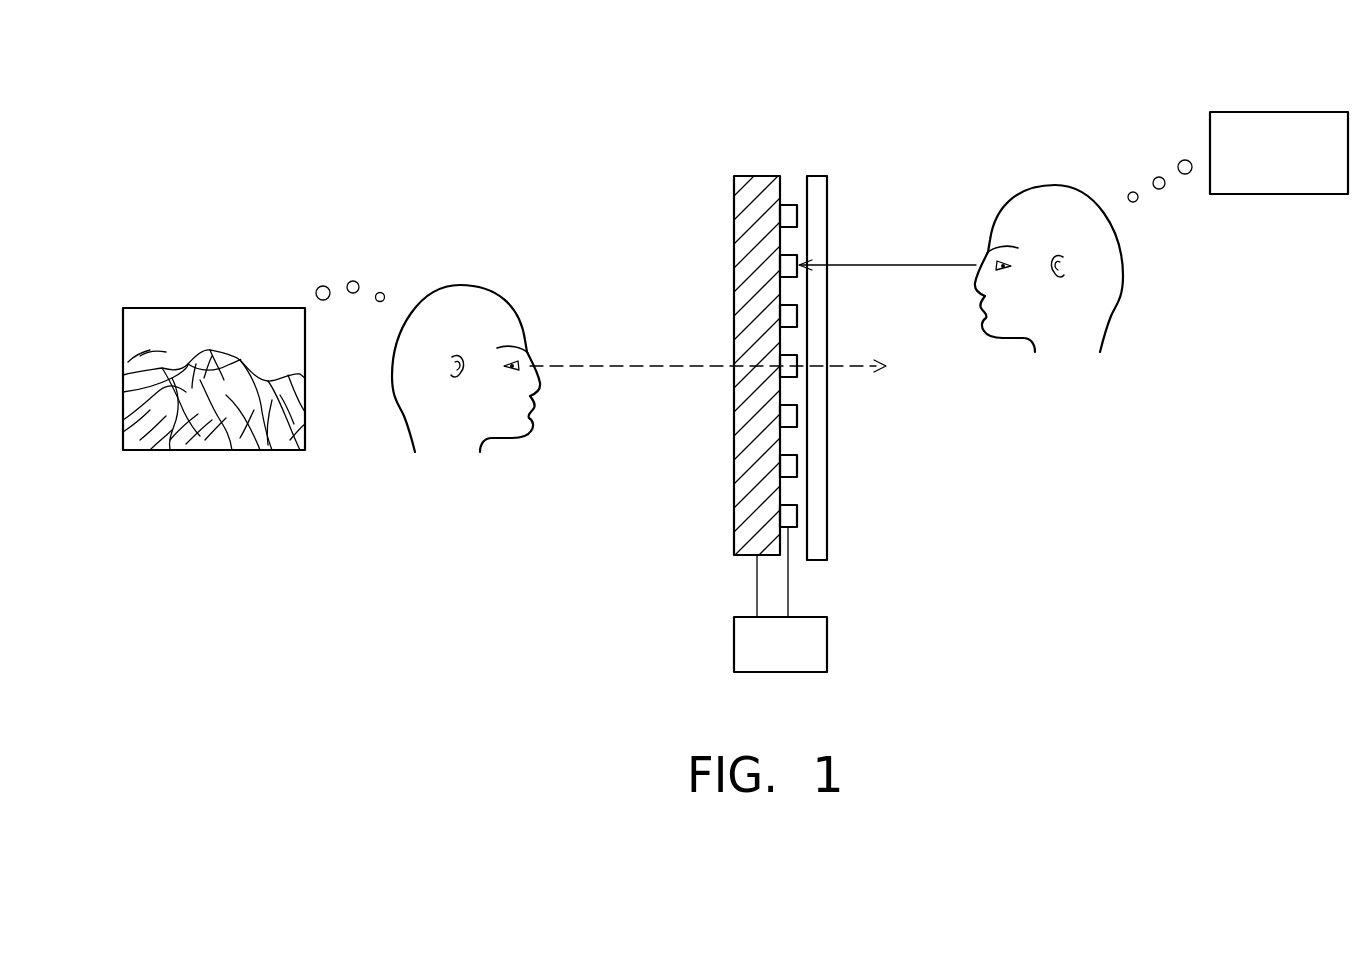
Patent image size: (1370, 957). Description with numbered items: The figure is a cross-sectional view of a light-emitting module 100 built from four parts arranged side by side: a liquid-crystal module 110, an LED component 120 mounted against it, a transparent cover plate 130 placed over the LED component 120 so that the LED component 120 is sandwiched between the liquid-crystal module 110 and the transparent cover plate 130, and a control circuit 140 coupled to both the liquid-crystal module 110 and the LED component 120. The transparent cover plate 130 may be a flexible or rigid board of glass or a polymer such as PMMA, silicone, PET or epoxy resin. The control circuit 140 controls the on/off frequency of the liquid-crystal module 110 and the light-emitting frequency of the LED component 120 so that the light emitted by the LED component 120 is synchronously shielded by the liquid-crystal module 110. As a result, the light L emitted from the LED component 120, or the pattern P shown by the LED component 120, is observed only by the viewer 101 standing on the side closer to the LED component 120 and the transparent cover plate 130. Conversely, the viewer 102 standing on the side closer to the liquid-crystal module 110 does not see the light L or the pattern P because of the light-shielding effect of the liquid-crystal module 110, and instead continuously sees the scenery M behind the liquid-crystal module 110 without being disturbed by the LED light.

The light-emitting module 100 is at (240, 83).
The scenery M is at (212, 308).
The viewer 102 is at (460, 285).
The liquid-crystal module 110 is at (755, 197).
The LED component 120 is at (791, 202).
The transparent cover plate 130 is at (817, 217).
The light L is at (797, 312).
The control circuit 140 is at (803, 660).
The viewer 101 is at (1055, 185).
The pattern P is at (1278, 112).